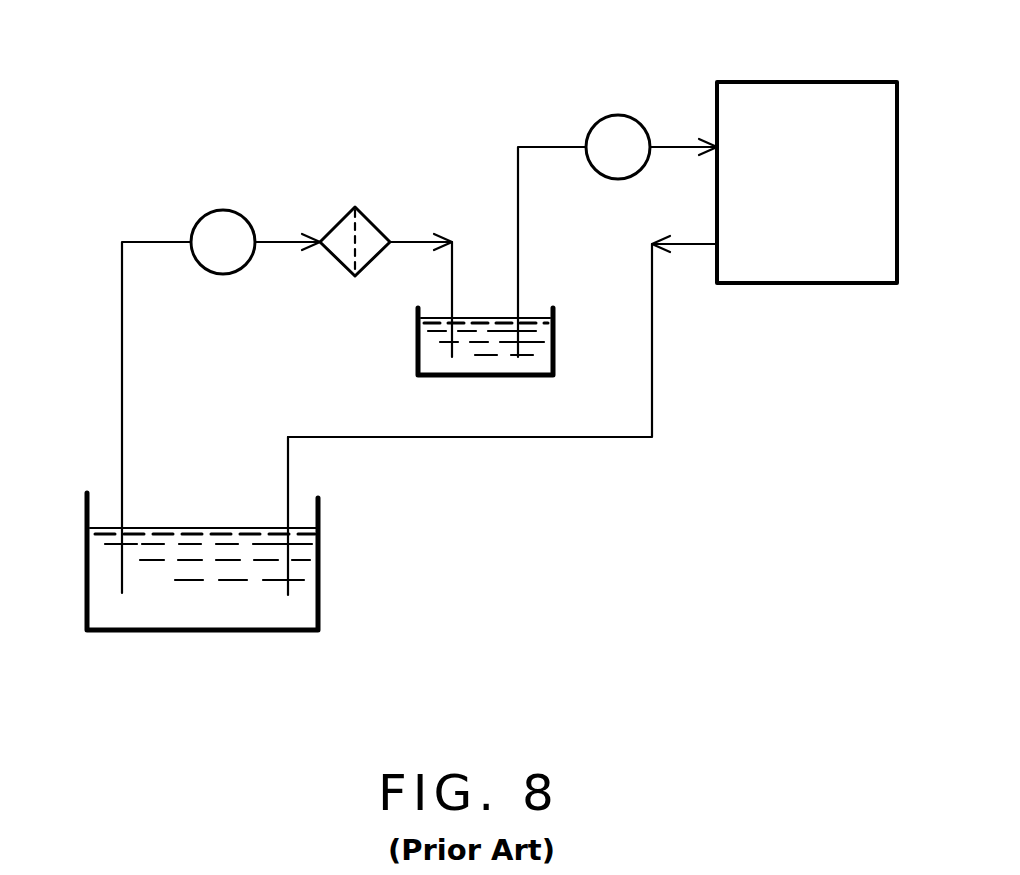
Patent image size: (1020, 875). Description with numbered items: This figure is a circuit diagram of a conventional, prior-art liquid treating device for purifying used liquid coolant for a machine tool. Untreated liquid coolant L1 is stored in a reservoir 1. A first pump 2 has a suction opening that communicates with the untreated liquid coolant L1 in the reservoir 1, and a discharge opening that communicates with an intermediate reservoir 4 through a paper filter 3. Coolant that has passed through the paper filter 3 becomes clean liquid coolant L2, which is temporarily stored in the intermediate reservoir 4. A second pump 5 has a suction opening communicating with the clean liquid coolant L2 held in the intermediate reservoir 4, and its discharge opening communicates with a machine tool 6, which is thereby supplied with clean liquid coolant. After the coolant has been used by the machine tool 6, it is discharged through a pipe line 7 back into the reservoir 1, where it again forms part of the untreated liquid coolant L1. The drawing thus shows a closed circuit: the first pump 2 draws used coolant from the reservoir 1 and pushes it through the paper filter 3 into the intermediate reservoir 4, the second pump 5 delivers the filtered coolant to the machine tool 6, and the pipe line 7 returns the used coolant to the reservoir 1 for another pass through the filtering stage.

The reservoir 1 is at (318, 573).
The first pump 2 is at (238, 212).
The paper filter 3 is at (372, 222).
The intermediate reservoir 4 is at (556, 315).
The second pump 5 is at (620, 115).
The machine tool 6 is at (780, 82).
The pipe line 7 is at (652, 405).
The untreated liquid coolant L1 is at (297, 527).
The clean liquid coolant L2 is at (528, 320).